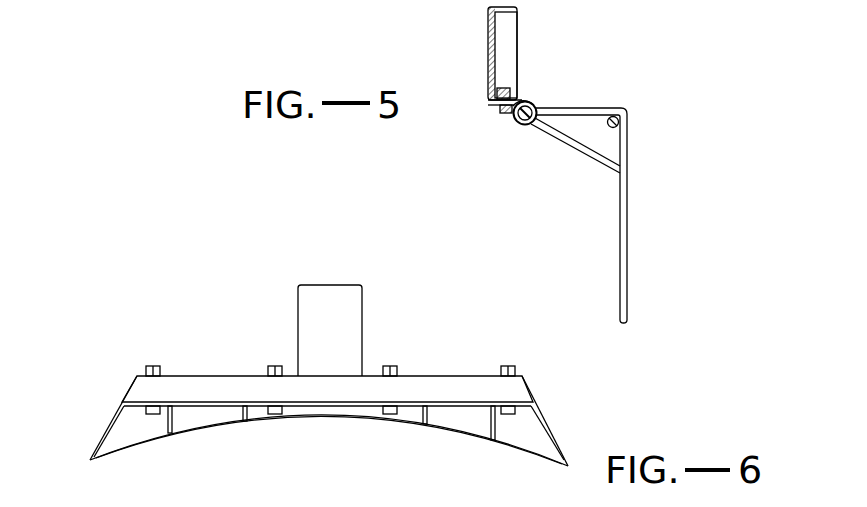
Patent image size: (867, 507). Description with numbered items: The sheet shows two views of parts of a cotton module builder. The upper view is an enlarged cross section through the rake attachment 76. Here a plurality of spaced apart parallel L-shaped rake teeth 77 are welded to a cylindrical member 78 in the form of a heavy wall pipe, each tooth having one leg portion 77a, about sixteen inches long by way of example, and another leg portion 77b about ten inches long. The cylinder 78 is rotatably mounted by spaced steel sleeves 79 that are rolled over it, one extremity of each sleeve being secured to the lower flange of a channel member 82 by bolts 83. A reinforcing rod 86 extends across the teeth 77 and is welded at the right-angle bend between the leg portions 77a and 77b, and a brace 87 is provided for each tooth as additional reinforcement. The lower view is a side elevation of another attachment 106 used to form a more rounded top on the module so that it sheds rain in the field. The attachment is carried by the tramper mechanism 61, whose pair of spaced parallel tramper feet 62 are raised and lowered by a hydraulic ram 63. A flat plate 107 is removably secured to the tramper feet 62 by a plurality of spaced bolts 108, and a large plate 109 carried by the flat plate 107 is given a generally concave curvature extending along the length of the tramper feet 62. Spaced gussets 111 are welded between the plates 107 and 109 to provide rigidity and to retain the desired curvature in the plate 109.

In FIG. 6, the tramper mechanism 61 is at (343, 350).
In FIG. 6, the tramper feet 62 is at (522, 393).
In FIG. 6, the hydraulic ram 63 is at (353, 327).
In FIG. 5, the rake attachment 76 is at (599, 163).
In FIG. 5, the rake teeth 77 is at (623, 186).
In FIG. 5, the leg portion 77a is at (628, 260).
In FIG. 5, the leg portion 77b is at (592, 108).
In FIG. 5, the cylindrical member 78 is at (534, 103).
In FIG. 5, the sleeves 79 is at (520, 125).
In FIG. 5, the channel member 82 is at (512, 38).
In FIG. 5, the bolts 83 is at (510, 90).
In FIG. 5, the reinforcing rod 86 is at (624, 114).
In FIG. 5, the braces 87 is at (582, 160).
In FIG. 6, the attachment 106 is at (343, 423).
In FIG. 6, the flat plate 107 is at (140, 390).
In FIG. 6, the bolts 108 is at (275, 364).
In FIG. 6, the large plate 109 is at (375, 430).
In FIG. 6, the gussets 111 is at (238, 420).